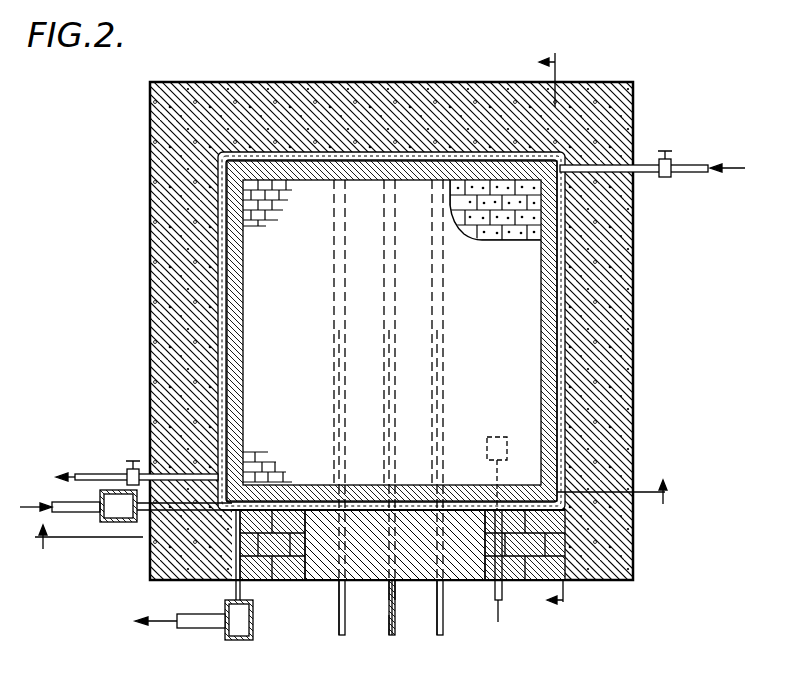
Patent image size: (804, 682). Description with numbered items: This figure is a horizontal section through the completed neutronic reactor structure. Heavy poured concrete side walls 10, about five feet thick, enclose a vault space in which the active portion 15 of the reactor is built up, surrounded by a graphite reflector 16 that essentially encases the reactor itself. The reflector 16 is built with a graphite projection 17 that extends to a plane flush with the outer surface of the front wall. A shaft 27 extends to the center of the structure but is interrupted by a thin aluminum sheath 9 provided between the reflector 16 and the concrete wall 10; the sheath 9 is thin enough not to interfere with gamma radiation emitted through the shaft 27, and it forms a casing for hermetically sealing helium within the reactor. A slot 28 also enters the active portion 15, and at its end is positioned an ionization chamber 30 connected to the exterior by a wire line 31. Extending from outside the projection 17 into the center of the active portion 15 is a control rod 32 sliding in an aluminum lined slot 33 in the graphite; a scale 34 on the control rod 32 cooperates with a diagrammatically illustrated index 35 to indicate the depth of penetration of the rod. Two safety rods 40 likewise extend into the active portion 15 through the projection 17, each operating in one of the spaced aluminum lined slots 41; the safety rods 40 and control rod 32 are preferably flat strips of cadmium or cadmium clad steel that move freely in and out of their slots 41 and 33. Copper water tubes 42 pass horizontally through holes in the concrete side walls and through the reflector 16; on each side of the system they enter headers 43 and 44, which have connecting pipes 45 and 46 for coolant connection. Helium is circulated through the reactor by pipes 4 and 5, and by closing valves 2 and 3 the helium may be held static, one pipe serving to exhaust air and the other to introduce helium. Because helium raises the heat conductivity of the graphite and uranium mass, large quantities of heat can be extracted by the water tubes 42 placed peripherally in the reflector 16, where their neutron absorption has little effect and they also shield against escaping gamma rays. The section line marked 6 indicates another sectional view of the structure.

The valve 2 is at (133, 461).
The valve 3 is at (664, 152).
The pipe 4 is at (97, 474).
The pipe 5 is at (689, 173).
The section line 6- 6 is at (555, 329).
The aluminum sheath 9 is at (565, 285).
The side walls 10 is at (608, 366).
The active portion 15 is at (407, 185).
The graphite reflector 16 is at (417, 165).
The graphite projection 17 is at (396, 588).
The shaft 27 is at (362, 321).
The slot 28 is at (488, 470).
The ionization chamber 30 is at (498, 437).
The wire line 31 is at (503, 614).
The control rod 32 is at (391, 624).
The aluminum lined slot 33 is at (389, 590).
The scale 34 is at (391, 606).
The index 35 is at (397, 604).
The safety rods 40 is at (338, 616).
The aluminum lined slots 41 is at (326, 582).
The water tubes 42 is at (142, 512).
The header 43 is at (104, 520).
The header 44 is at (253, 632).
The connecting pipe 45 is at (58, 500).
The connecting pipe 46 is at (203, 621).